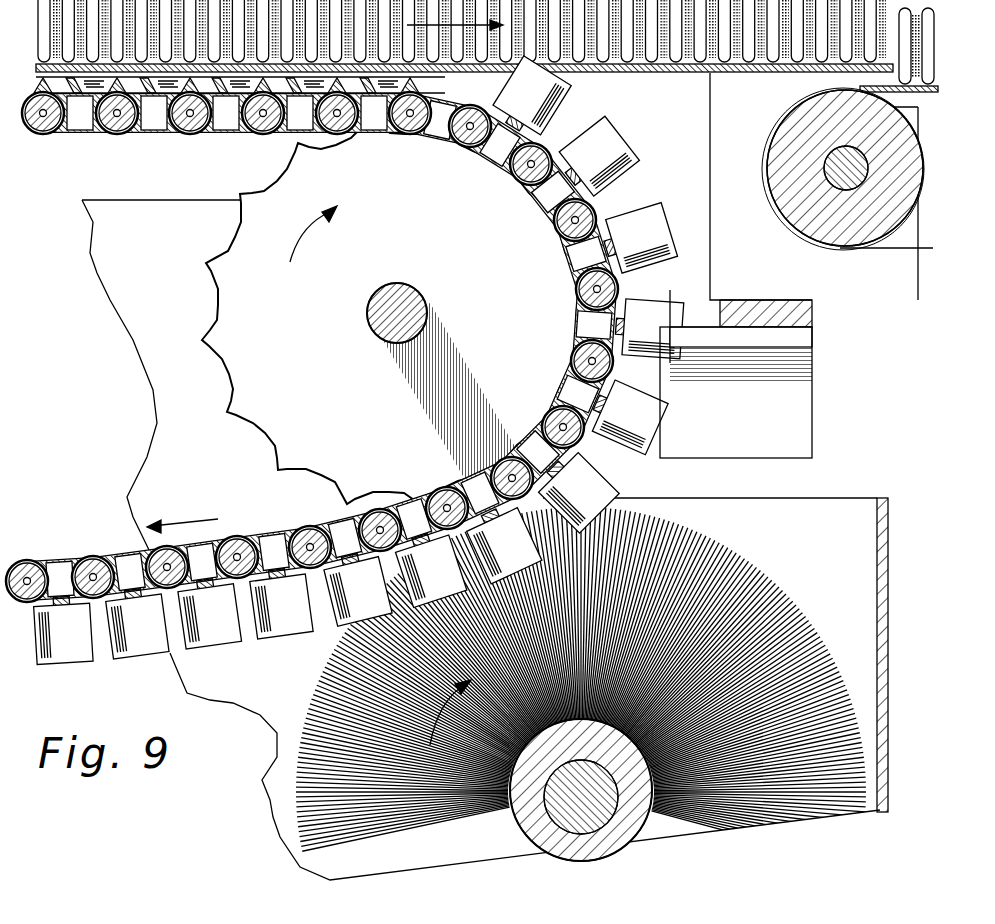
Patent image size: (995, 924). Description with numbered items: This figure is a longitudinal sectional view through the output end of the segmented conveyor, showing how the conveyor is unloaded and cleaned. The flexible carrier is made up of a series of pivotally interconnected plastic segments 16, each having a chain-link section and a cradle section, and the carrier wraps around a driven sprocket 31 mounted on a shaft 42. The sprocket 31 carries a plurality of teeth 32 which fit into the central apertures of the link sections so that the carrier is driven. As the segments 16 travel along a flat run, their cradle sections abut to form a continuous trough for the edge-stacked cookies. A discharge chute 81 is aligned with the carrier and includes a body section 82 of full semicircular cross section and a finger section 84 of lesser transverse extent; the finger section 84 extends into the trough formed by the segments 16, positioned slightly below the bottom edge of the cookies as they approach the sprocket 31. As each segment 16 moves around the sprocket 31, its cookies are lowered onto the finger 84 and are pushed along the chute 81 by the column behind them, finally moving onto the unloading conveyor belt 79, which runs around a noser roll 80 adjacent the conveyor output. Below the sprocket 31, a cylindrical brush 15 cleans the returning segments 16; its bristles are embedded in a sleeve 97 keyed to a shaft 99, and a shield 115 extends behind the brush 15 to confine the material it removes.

The cylindrical brush 15 is at (727, 583).
The plastic segment 16 is at (645, 248).
The driven sprocket 31 is at (277, 417).
The teeth 32 is at (207, 343).
The shaft 42 is at (413, 290).
The conveyor belt 79 is at (887, 252).
The noser roll 80 is at (852, 234).
The discharge chute 81 is at (486, 85).
The body section 82 is at (633, 73).
The finger section 84 is at (369, 84).
The sleeve 97 is at (662, 832).
The shaft 99 is at (590, 822).
The shield 115 is at (887, 573).